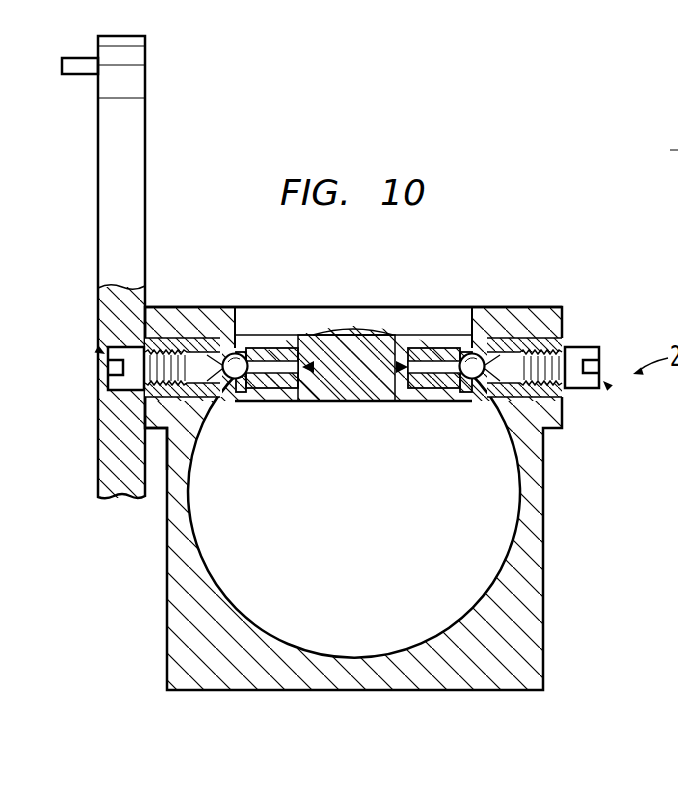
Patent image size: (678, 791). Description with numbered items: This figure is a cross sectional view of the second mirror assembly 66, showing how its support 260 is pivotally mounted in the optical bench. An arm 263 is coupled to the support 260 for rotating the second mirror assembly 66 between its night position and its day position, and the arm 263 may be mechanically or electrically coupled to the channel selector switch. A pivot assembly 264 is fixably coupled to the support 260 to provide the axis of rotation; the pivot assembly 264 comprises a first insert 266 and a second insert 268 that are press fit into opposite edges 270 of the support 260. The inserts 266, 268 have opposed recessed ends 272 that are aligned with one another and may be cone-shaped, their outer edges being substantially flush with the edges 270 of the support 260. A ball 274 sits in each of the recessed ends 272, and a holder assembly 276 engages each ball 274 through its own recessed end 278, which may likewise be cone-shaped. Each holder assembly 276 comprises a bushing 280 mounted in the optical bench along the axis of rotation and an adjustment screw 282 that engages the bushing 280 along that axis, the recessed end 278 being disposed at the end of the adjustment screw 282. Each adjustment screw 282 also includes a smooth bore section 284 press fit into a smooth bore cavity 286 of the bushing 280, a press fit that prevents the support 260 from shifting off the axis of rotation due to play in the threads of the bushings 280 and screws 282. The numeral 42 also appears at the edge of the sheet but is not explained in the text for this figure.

The optical system 42 is at (669, 135).
The second mirror assembly 66 is at (546, 242).
The support 260 is at (363, 343).
The arm 263 is at (133, 137).
The pivot assembly 264 is at (392, 404).
The first insert 266 is at (290, 402).
The second insert 268 is at (415, 401).
The edges of the support 270 is at (229, 403).
The recessed ends 272 is at (238, 348).
The ball 274 is at (268, 350).
The holder assembly 276 is at (98, 350).
The recessed end of holder assembly 278 is at (213, 410).
The bushing 280 is at (167, 307).
The adjustment screw 282 is at (122, 368).
The smooth bore section 284 is at (162, 435).
The smooth bore cavity 286 is at (192, 330).